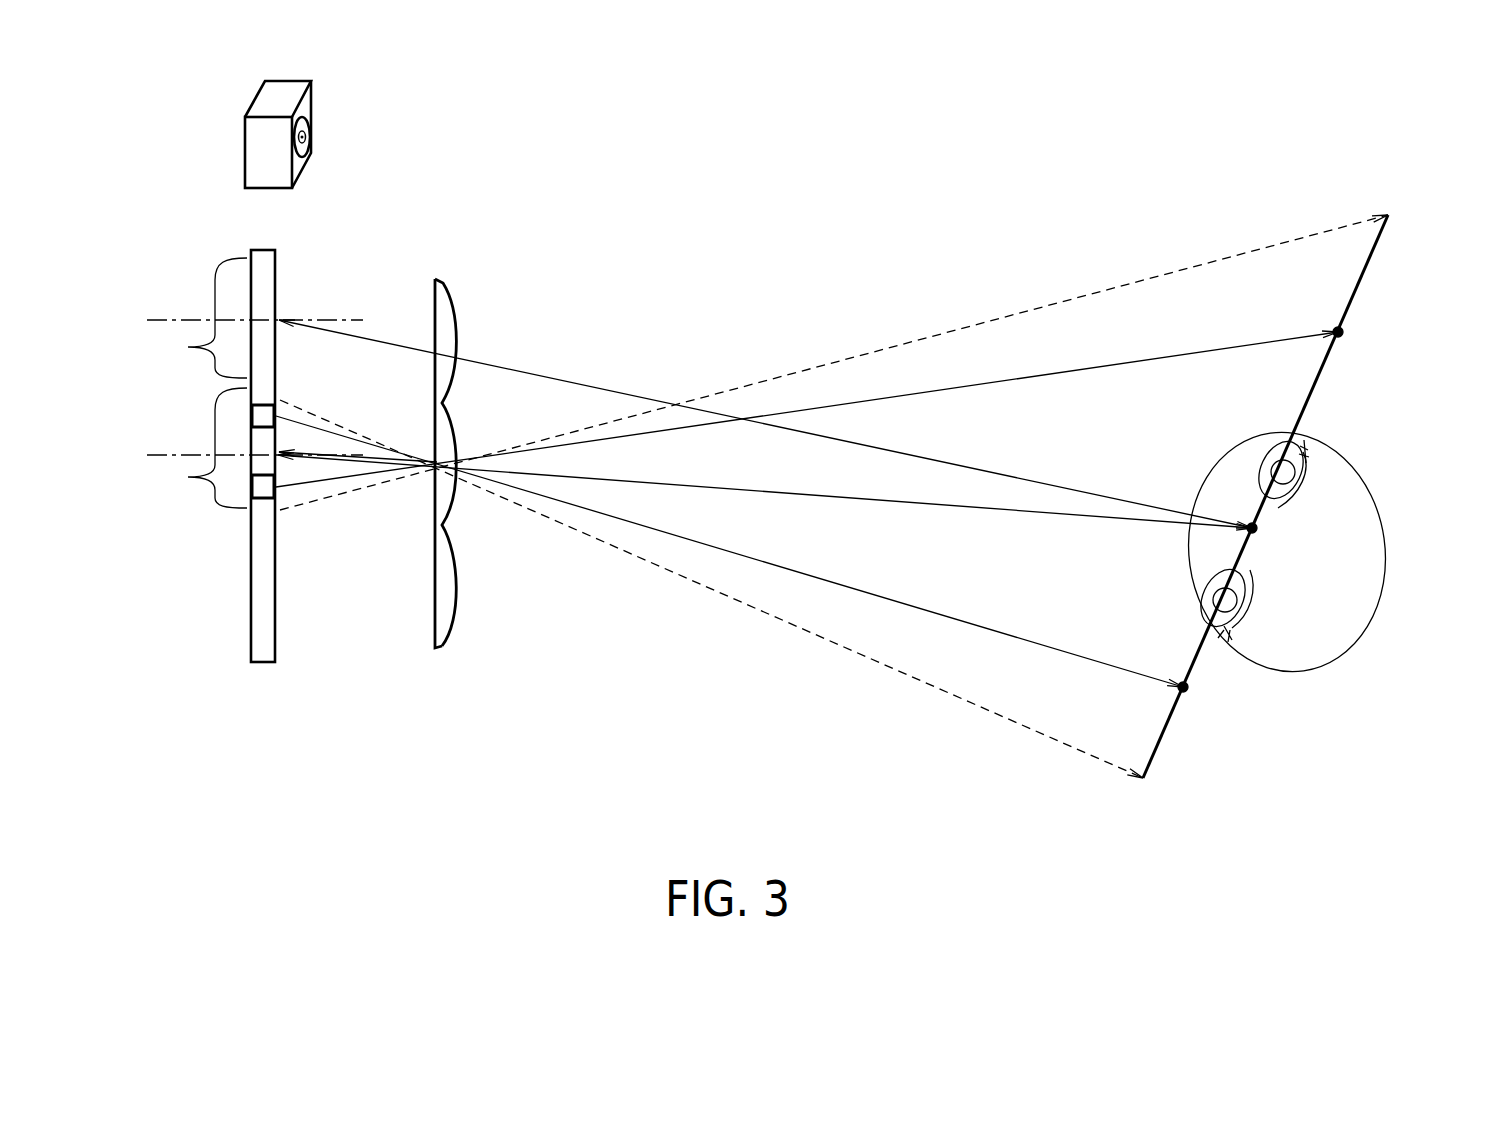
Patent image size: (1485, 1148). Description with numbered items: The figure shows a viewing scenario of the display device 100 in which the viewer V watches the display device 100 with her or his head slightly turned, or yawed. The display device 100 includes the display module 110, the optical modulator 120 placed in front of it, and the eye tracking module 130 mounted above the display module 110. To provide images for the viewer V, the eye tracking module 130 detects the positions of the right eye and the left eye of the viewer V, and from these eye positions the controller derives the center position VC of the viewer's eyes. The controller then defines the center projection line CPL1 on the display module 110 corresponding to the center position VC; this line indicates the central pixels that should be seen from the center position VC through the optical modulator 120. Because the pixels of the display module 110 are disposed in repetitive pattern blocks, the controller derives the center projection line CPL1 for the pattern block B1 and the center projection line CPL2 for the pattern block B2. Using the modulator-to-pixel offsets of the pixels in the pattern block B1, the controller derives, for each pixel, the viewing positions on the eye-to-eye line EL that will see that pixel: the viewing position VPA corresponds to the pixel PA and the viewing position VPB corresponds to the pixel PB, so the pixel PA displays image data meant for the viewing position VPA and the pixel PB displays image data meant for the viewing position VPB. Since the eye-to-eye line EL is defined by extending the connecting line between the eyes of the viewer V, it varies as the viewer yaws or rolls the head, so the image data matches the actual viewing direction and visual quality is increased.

The display device 100 is at (203, 684).
The display module 110 is at (277, 632).
The optical modulator 120 is at (457, 613).
The eye tracking module 130 is at (313, 103).
The pixel PA is at (259, 500).
The pixel PB is at (262, 405).
The center projection line CPL1 is at (157, 453).
The center projection line CPL2 is at (157, 318).
The pattern block B1 is at (198, 448).
The pattern block B2 is at (198, 318).
The eye-to-eye line EL is at (1148, 782).
The viewing position VPA is at (1345, 332).
The viewing position VPB is at (1188, 692).
The center position VC is at (1256, 529).
The viewer V is at (1348, 441).